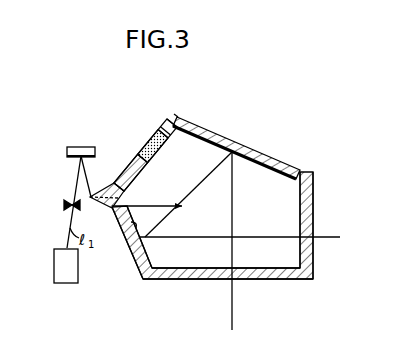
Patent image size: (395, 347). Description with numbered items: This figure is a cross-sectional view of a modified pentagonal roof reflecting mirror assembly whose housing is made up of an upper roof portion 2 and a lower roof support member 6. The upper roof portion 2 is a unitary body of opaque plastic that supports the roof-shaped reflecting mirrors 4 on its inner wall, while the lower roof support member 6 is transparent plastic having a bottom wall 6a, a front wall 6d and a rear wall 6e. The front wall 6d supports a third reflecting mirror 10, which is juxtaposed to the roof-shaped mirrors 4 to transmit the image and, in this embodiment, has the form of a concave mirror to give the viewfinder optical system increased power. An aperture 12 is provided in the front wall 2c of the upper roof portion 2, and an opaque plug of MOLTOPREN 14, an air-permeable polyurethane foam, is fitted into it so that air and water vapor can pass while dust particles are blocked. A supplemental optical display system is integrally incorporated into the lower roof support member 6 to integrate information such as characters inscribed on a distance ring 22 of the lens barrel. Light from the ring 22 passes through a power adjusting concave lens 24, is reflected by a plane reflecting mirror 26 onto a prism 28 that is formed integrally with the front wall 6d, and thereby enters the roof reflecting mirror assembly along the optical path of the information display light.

The upper roof portion 2 is at (253, 143).
The front wall of the upper roof portion 2c is at (168, 122).
The roof-shaped reflecting mirrors 4 is at (259, 166).
The lower roof support member 6 is at (285, 281).
The bottom wall 6a is at (201, 279).
The front wall 6d is at (134, 267).
The rear wall 6e is at (307, 249).
The third reflecting mirror 10 is at (134, 226).
The aperture 12 is at (145, 175).
The plug of MOLTOPREN 14 is at (152, 138).
The distance ring 22 is at (62, 267).
The power adjusting concave lens 24 is at (66, 203).
The plane reflecting mirror 26 is at (72, 147).
The prism 28 is at (102, 189).